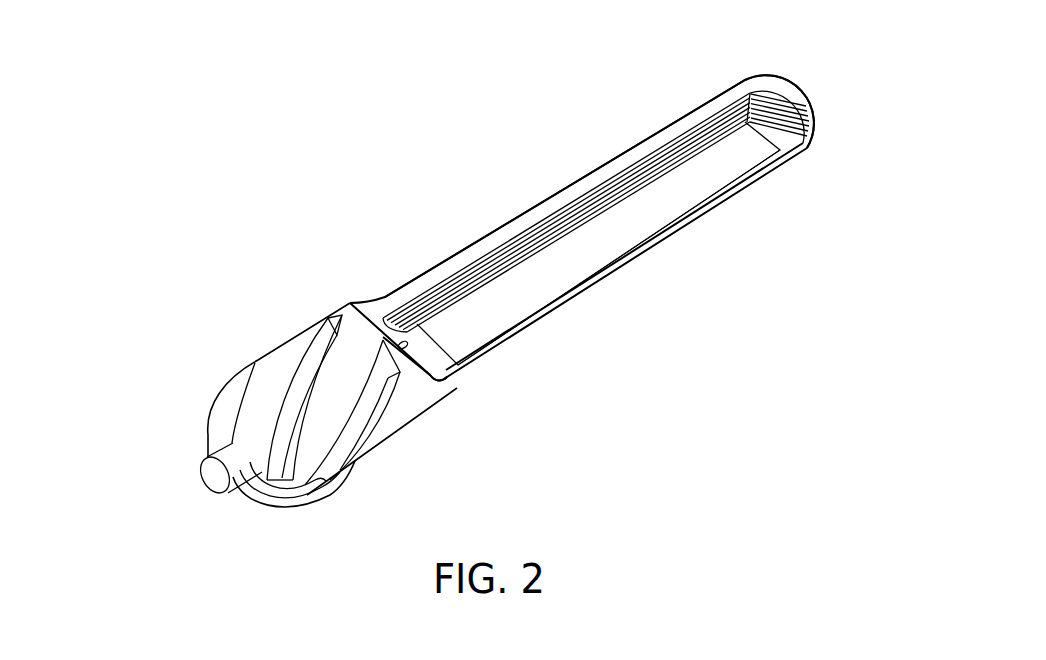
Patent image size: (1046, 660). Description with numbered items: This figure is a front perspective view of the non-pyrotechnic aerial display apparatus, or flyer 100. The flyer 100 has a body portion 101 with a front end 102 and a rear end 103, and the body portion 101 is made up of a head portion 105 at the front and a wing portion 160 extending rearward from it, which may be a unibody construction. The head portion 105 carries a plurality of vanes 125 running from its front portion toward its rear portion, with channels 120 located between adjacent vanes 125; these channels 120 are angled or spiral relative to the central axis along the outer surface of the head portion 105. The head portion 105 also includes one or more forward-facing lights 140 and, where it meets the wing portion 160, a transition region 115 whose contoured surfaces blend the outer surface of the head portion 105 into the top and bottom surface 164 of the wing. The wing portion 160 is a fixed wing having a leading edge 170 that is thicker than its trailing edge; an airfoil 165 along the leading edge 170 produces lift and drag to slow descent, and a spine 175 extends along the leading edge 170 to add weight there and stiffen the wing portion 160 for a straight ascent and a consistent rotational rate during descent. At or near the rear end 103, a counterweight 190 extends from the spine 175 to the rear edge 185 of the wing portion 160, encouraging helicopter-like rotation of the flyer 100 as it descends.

The flyer 100 is at (190, 145).
The body portion 101 is at (510, 305).
The front end 102 is at (110, 533).
The rear end 103 is at (845, 82).
The head portion 105 is at (260, 409).
The transition region 115 is at (435, 363).
The channels 120 is at (370, 425).
The vanes 125 is at (313, 453).
The forward-facing lights 140 is at (216, 476).
The wing portion 160 is at (672, 248).
The bottom surface 164 is at (592, 260).
The airfoil 165 is at (522, 225).
The leading edge 170 is at (583, 177).
The spine 175 is at (470, 255).
The rear edge 185 is at (770, 90).
The counterweight 190 is at (782, 100).